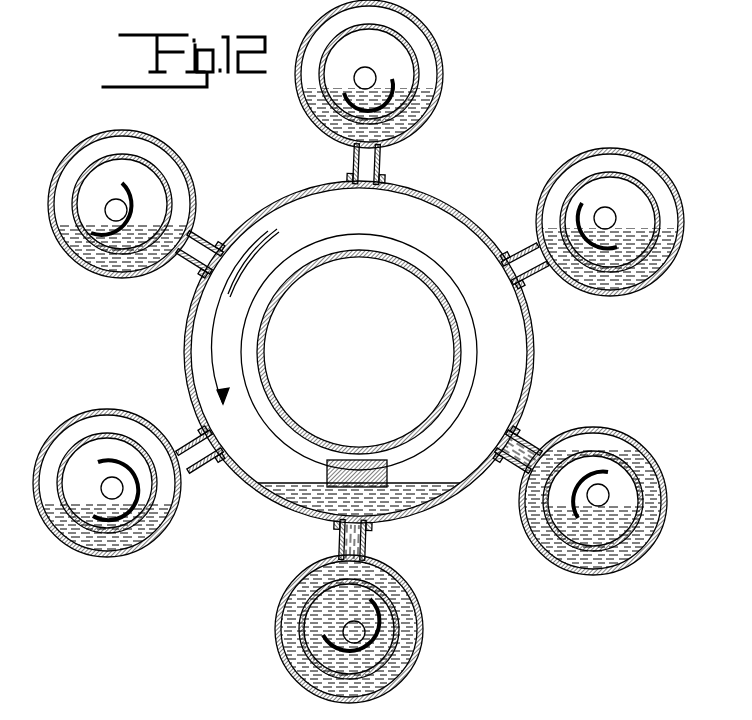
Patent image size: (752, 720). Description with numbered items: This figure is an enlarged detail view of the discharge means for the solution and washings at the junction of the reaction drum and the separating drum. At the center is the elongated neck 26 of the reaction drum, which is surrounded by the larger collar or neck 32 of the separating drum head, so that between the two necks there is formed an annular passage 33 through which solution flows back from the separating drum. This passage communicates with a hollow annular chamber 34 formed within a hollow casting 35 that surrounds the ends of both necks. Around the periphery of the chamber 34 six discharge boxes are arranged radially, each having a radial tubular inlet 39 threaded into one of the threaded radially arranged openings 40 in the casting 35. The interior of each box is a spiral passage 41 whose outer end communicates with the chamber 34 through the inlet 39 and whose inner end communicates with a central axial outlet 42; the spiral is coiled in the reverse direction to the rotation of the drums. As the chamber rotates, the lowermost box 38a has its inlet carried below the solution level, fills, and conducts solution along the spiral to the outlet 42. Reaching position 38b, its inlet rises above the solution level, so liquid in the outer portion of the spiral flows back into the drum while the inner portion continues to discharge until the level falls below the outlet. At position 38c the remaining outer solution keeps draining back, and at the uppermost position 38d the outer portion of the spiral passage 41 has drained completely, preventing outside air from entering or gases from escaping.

The neck 26 is at (350, 341).
The collar or neck 32 is at (478, 374).
The annular passage 33 is at (443, 418).
The annular chamber 34 is at (504, 389).
The hollow casting 35 is at (374, 348).
The discharge box 38a is at (372, 629).
The discharge box 38b is at (604, 430).
The discharge box 38c is at (636, 160).
The discharge box 38d is at (470, 52).
The radial tubular inlet 39 is at (518, 446).
The threaded radial opening 40 is at (346, 185).
The spiral passage 41 is at (413, 115).
The central axial outlet 42 is at (101, 487).